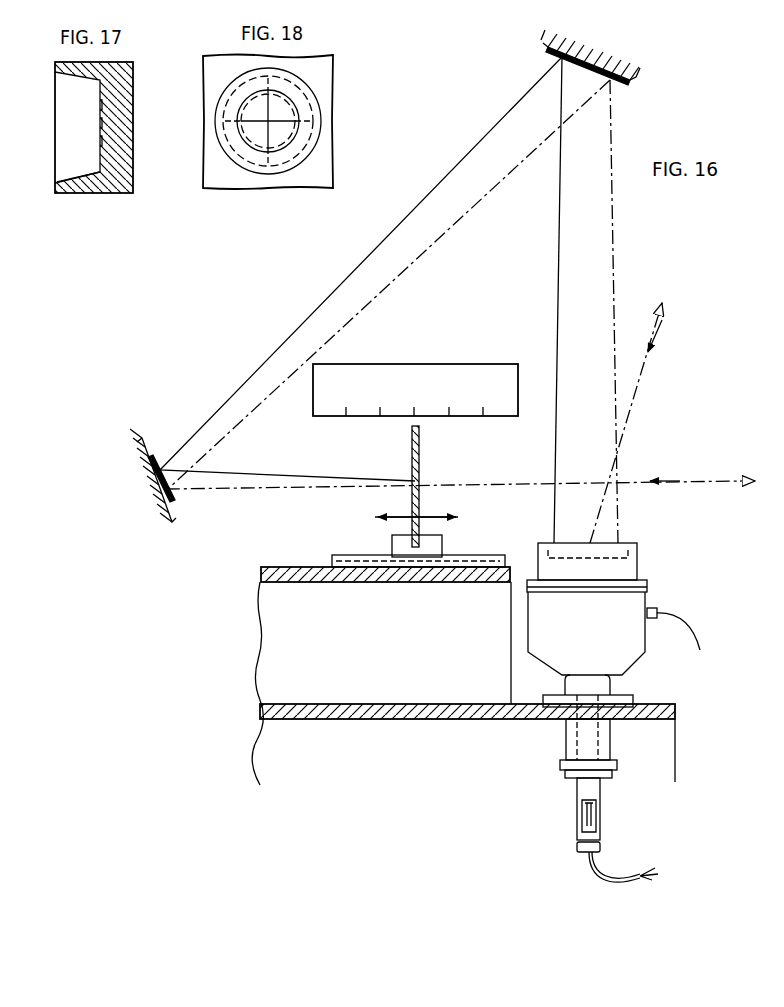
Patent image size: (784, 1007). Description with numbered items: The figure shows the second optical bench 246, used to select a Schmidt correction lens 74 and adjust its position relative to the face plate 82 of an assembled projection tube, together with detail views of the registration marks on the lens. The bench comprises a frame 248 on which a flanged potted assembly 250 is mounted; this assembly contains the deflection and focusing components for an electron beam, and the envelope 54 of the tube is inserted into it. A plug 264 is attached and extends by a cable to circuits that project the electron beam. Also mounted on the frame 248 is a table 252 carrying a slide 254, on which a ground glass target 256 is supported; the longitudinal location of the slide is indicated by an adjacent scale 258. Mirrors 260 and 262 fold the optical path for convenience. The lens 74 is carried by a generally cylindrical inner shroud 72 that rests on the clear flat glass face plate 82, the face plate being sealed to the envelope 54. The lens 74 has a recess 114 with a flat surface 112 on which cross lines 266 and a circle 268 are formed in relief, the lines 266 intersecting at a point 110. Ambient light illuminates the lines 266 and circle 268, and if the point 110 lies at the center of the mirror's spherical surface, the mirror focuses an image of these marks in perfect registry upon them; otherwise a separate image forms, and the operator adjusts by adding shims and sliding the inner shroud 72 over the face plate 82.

In FIG. 16, the envelope 54 is at (648, 648).
In FIG. 16, the inner shroud 72 is at (640, 563).
In FIG. 17, the Schmidt correction lens 74 is at (135, 118).
In FIG. 18, the Schmidt correction lens 74 is at (337, 154).
In FIG. 16, the Schmidt correction lens 74 is at (625, 548).
In FIG. 16, the face plate 82 is at (648, 585).
In FIG. 18, the point 110 is at (275, 117).
In FIG. 17, the surface 112 is at (100, 118).
In FIG. 18, the surface 112 is at (290, 88).
In FIG. 17, the recess 114 is at (78, 178).
In FIG. 16, the second optical bench 246 is at (525, 355).
In FIG. 16, the frame 248 is at (328, 719).
In FIG. 16, the flanged potted assembly 250 is at (565, 741).
In FIG. 16, the table 252 is at (305, 567).
In FIG. 16, the slide 254 is at (365, 555).
In FIG. 16, the ground glass target 256 is at (420, 458).
In FIG. 16, the scale 258 is at (423, 363).
In FIG. 16, the mirror 260 is at (560, 55).
In FIG. 16, the mirror 262 is at (176, 497).
In FIG. 16, the plug 264 is at (576, 846).
In FIG. 18, the cross lines 266 is at (265, 163).
In FIG. 18, the circle 268 is at (291, 140).